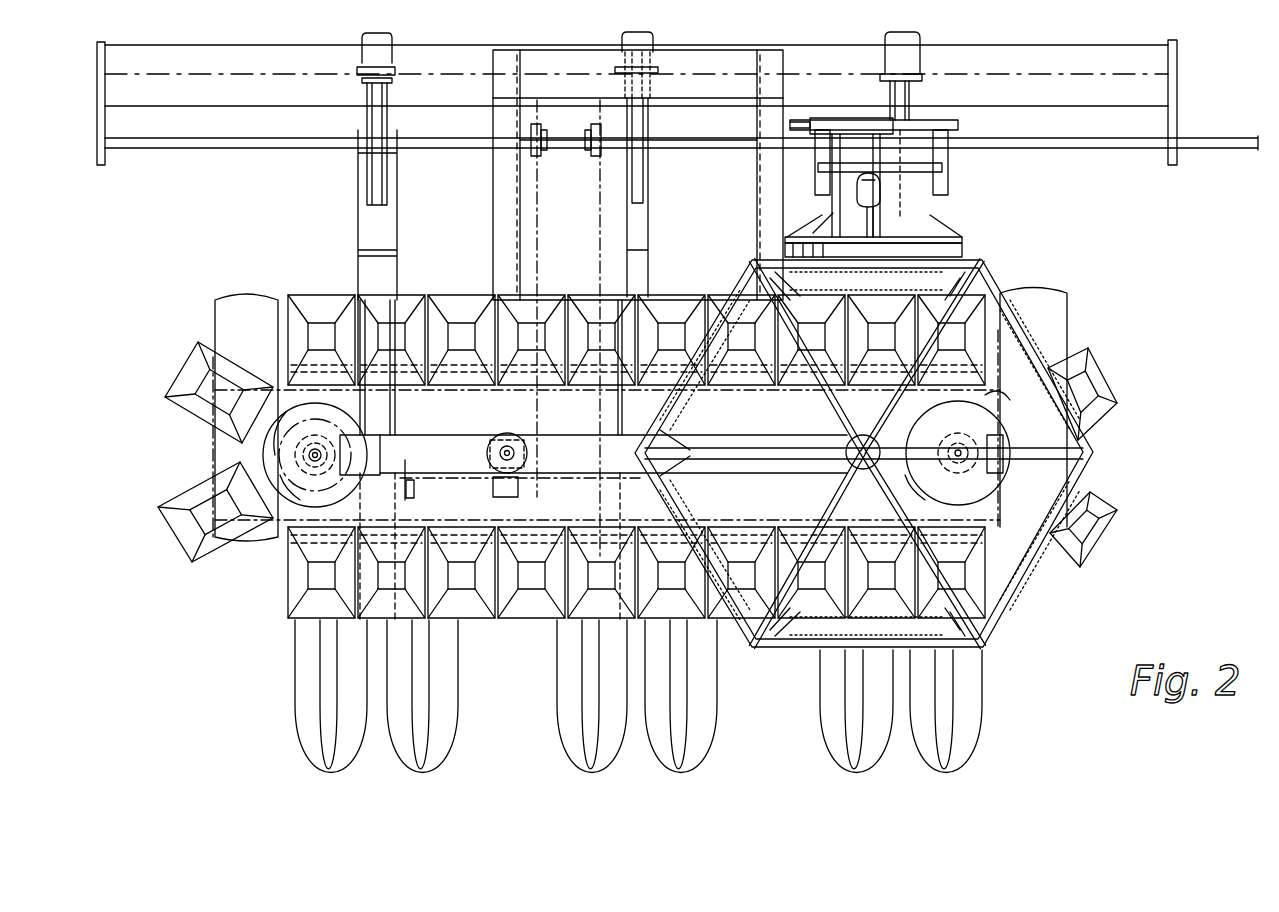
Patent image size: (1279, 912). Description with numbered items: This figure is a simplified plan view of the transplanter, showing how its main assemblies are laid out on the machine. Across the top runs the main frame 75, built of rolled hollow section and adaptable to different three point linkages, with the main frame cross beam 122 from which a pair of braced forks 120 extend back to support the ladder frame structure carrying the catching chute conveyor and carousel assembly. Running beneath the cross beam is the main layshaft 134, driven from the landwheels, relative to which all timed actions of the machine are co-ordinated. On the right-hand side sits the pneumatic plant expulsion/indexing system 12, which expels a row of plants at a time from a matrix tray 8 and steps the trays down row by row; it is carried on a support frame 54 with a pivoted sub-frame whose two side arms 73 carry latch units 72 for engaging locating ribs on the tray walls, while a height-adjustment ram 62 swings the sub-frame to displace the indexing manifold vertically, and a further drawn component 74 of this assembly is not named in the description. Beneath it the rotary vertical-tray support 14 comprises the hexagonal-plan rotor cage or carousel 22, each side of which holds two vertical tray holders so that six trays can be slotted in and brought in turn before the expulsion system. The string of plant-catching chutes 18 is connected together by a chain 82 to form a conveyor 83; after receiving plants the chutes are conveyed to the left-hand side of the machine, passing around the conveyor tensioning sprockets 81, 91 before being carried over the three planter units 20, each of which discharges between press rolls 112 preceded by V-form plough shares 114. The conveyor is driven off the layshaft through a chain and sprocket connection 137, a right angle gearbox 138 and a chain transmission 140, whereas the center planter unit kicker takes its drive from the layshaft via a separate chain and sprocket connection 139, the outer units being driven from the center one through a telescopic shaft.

The main frame cross beam 122 is at (124, 86).
The main layshaft 134 is at (197, 147).
The main frame 75 is at (915, 165).
The braced forks 120 is at (495, 186).
The chain and sprocket connection 137 is at (535, 220).
The chain and sprocket connection 139 is at (600, 242).
The plant-catching chutes 18 is at (318, 300).
The V-form plough shares 114 is at (432, 298).
The planter unit 20 is at (262, 678).
The conveyor tensioning sprocket 91 is at (218, 352).
The conveyor 83 is at (227, 458).
The chain transmission 140 is at (432, 428).
The right angle gearbox 138 is at (530, 489).
The chain 82 is at (546, 392).
The support frame 54 is at (960, 126).
The pneumatic plant expulsion/indexing system 12 is at (974, 164).
The cylinder 74 is at (948, 186).
The height-adjustment ram 62 is at (860, 202).
The side arms 73 is at (965, 248).
The latch units 72 is at (990, 282).
The rotary vertical-tray support 14 is at (1022, 252).
The matrix tray 8 is at (810, 275).
The conveyor tensioning sprocket 81 is at (1042, 340).
The rotor cage or carousel 22 is at (1092, 440).
The press rolls 112 is at (422, 775).